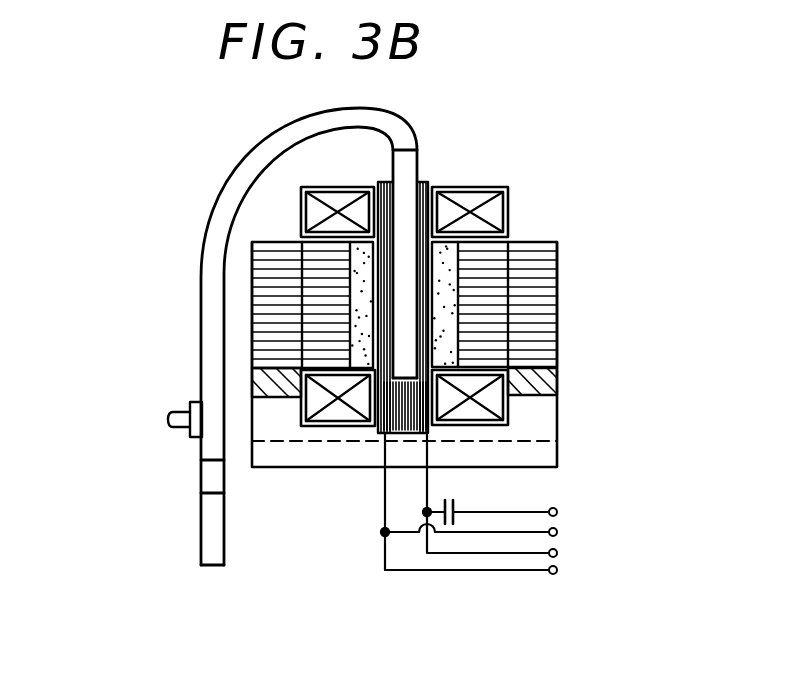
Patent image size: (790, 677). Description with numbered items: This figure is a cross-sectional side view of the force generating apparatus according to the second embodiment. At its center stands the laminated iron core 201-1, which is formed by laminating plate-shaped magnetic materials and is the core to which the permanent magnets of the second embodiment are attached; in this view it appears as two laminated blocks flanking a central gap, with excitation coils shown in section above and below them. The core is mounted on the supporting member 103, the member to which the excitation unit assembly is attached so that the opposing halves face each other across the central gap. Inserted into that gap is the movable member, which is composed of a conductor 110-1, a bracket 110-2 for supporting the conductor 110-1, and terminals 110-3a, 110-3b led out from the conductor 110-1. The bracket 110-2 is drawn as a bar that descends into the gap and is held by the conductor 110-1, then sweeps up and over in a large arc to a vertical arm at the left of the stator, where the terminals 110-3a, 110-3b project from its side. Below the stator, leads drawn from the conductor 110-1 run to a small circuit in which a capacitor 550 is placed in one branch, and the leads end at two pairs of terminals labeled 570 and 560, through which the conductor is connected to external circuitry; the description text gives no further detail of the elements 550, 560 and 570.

The conductor 110-1 is at (421, 182).
The bracket 110-2 is at (376, 110).
The terminal 110-3a is at (168, 420).
The terminal 110-3b is at (119, 435).
The iron core 201-1 is at (557, 272).
The supporting member 103 is at (548, 382).
The capacitor 550 is at (449, 503).
The terminal pair 560 is at (565, 545).
The terminal pair 570 is at (565, 500).